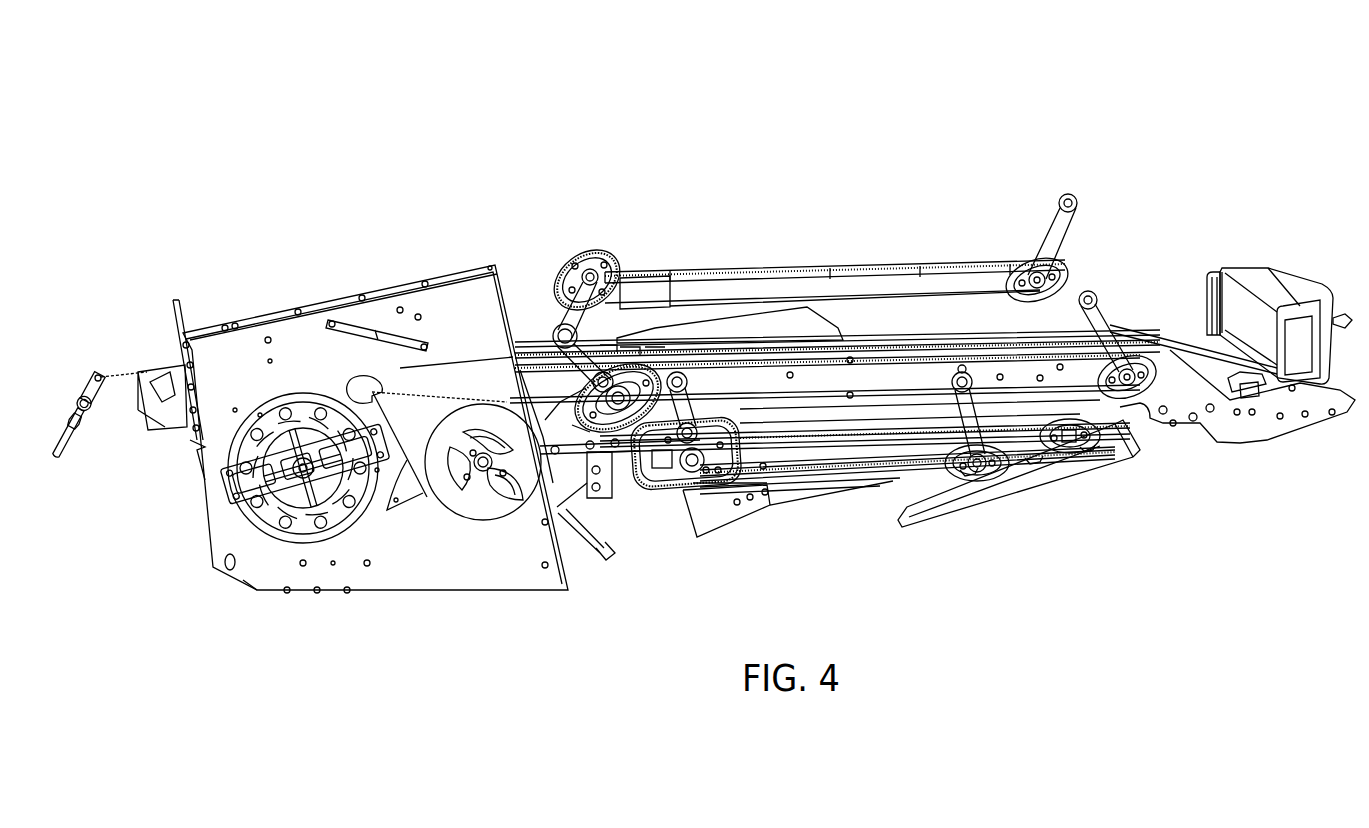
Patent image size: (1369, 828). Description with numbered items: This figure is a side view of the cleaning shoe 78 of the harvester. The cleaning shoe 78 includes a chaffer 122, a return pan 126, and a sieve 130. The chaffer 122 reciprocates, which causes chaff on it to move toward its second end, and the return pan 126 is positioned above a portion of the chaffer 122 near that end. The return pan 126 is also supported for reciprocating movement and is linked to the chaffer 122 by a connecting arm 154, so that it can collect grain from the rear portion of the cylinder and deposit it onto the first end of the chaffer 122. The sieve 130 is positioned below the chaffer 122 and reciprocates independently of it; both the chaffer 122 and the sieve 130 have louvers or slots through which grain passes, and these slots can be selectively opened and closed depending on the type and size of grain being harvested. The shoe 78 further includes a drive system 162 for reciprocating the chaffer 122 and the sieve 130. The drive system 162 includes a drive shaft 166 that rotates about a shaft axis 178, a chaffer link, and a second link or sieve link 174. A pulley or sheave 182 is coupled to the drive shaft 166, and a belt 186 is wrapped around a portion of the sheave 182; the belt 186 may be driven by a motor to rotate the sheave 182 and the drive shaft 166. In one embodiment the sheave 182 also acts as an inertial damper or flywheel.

The cleaning shoe 78 is at (1136, 141).
The chaffer 122 is at (1072, 319).
The return pan 126 is at (923, 263).
The sieve 130 is at (860, 462).
The connecting arm 154 is at (573, 272).
The drive system 162 is at (480, 548).
The drive shaft 166 is at (473, 480).
The sieve link 174 is at (572, 407).
The shaft axis 178 is at (630, 438).
The sheave 182 is at (510, 498).
The belt 186 is at (430, 393).